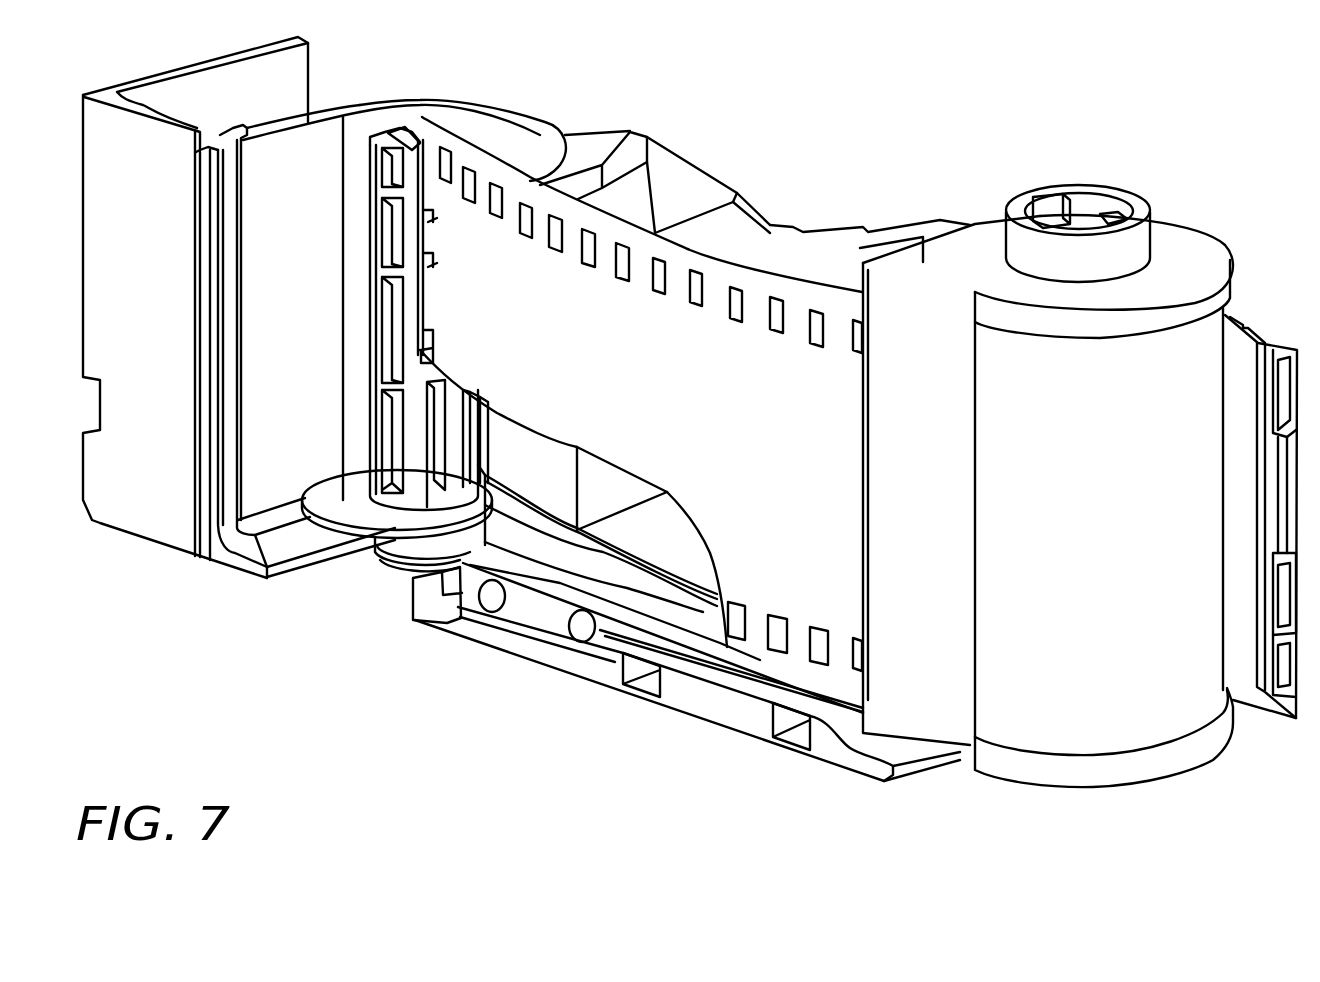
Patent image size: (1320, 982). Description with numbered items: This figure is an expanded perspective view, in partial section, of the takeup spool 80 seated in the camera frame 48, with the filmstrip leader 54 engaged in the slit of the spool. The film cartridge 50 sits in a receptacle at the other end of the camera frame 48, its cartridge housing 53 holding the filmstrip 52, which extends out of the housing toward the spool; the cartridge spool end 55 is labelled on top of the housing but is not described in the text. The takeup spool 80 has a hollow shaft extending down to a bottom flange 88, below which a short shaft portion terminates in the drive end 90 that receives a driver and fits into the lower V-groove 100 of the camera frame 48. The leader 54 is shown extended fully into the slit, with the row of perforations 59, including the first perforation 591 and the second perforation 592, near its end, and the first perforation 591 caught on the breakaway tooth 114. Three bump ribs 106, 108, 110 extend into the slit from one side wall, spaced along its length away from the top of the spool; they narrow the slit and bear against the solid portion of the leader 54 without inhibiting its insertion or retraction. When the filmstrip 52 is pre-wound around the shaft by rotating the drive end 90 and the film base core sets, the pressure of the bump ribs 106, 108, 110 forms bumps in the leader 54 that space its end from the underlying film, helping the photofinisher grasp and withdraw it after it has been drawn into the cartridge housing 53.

The camera frame 48 is at (706, 705).
The film cartridge 50 is at (1037, 486).
The filmstrip 52 is at (813, 539).
The cartridge housing 53 is at (1119, 669).
The filmstrip leader 54 is at (574, 316).
The cartridge spool end 55 is at (1115, 183).
The perforations 59 is at (565, 142).
The perforation 591 is at (447, 118).
The perforation 592 is at (447, 118).
The takeup spool 80 is at (371, 440).
The bottom flange 88 is at (363, 545).
The drive end 90 is at (402, 575).
The lower V-groove 100 is at (322, 580).
The bump rib 106 is at (428, 222).
The bump rib 108 is at (436, 266).
The bump rib 110 is at (433, 348).
The breakaway tooth 114 is at (420, 135).